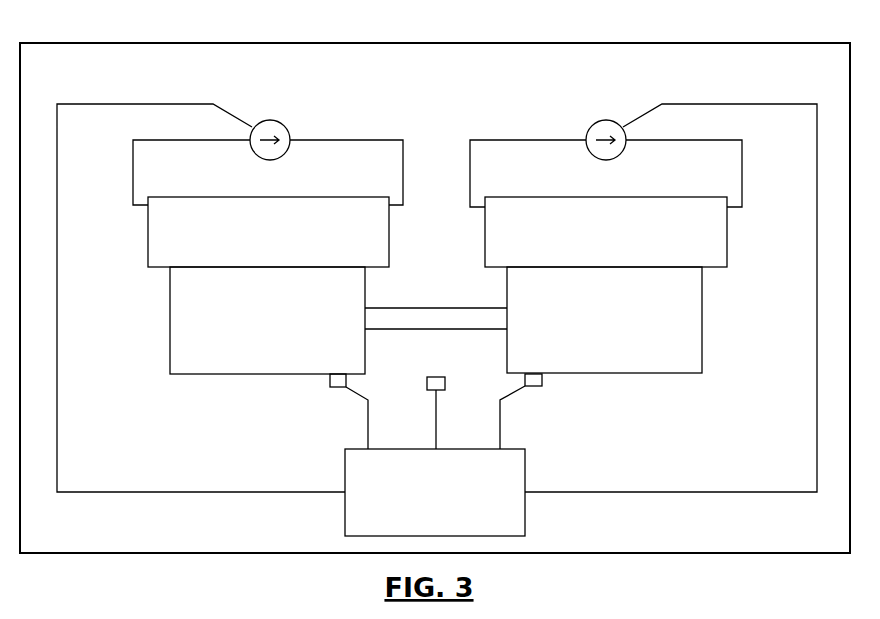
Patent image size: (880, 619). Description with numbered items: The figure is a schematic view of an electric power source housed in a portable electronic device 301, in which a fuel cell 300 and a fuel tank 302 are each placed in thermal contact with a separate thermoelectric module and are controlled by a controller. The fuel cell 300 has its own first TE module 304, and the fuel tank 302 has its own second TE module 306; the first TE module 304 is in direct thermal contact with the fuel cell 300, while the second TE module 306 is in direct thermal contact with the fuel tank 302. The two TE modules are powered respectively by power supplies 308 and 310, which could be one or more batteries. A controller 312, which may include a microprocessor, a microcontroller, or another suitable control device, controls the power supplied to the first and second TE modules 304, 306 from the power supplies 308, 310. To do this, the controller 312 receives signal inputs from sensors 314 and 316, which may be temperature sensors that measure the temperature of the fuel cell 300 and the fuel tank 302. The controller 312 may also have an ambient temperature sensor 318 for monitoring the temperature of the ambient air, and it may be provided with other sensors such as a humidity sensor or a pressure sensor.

The portable electronic device 301 is at (699, 43).
The fuel cell 300 is at (176, 341).
The fuel tank 302 is at (690, 355).
The first TE module 304 is at (158, 247).
The second TE module 306 is at (715, 246).
The power supply 308 is at (273, 122).
The power supply 310 is at (607, 126).
The controller 312 is at (517, 522).
The sensor 314 is at (330, 384).
The sensor 316 is at (545, 385).
The ambient temperature sensor 318 is at (430, 378).